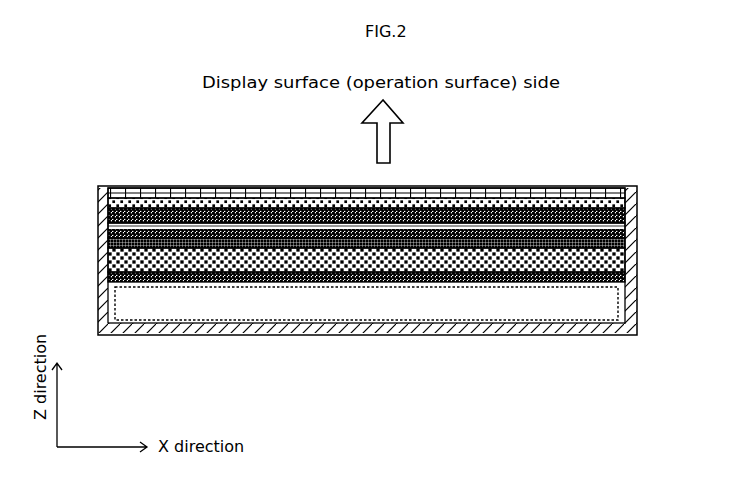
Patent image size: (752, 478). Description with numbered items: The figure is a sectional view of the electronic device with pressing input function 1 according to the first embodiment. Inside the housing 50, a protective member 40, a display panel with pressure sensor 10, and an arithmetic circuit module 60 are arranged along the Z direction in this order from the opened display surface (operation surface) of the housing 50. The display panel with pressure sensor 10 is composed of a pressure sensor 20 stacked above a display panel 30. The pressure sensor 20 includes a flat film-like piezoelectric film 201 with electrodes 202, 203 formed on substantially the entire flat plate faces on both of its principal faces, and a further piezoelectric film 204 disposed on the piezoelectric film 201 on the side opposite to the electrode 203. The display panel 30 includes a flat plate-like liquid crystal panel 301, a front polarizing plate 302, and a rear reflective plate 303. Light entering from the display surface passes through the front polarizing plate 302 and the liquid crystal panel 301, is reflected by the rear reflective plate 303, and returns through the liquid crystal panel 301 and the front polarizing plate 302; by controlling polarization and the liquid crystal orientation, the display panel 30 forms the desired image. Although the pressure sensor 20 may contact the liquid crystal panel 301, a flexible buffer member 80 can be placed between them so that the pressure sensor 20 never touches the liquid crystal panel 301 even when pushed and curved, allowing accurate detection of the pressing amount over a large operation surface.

The electronic device with pressing input function 1 is at (170, 153).
The display panel with pressure sensor 10 is at (700, 176).
The pressure sensor 20 is at (686, 188).
The piezoelectric film 201 is at (628, 217).
The electrode 202 is at (628, 204).
The electrode 203 is at (628, 232).
The piezoelectric film 204 is at (628, 243).
The display panel 30 is at (52, 202).
The liquid crystal panel 301 is at (113, 258).
The front polarizing plate 302 is at (110, 204).
The rear reflective plate 303 is at (113, 277).
The protective member 40 is at (588, 188).
The housing 50 is at (630, 312).
The arithmetic circuit module 60 is at (497, 328).
The buffer member 80 is at (630, 258).